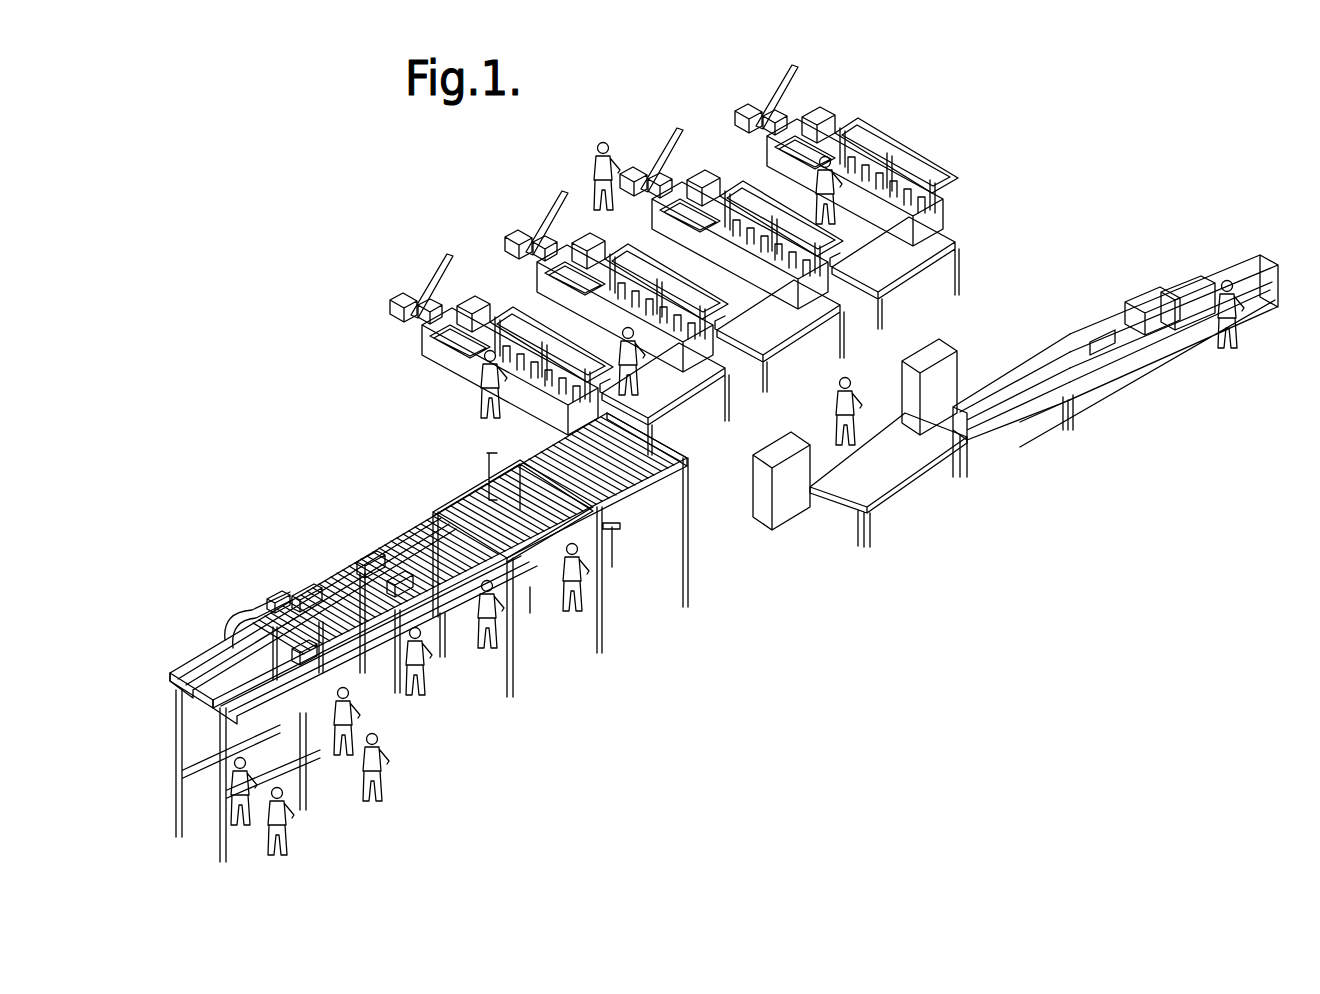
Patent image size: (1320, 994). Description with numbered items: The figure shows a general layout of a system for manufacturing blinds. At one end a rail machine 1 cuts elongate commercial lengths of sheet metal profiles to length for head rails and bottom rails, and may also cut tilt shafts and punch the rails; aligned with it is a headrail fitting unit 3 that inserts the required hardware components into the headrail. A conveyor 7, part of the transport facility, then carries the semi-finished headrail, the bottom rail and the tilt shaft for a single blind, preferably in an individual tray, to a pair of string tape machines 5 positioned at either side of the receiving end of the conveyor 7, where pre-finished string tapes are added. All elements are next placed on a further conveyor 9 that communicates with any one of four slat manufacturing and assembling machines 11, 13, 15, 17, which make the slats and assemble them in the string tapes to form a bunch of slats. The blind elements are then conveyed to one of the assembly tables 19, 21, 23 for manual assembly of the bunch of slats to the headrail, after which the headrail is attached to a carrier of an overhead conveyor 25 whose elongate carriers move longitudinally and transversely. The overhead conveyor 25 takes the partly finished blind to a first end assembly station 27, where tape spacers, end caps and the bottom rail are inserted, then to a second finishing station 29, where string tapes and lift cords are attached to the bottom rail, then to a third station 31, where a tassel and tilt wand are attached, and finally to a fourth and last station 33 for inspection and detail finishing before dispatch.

The rail machine 1 is at (1105, 378).
The headrail fitting unit 3 is at (990, 458).
The string tape machine 5 is at (785, 517).
The conveyor 7 is at (893, 497).
The further conveyor 9 is at (935, 244).
The slat manufacturing and assembling machine 11 is at (738, 97).
The slat manufacturing and assembling machine 13 is at (645, 150).
The slat manufacturing and assembling machine 15 is at (492, 247).
The slat manufacturing and assembling machine 17 is at (418, 293).
The assembly table 19 is at (592, 587).
The assembly table 21 is at (525, 641).
The assembly table 23 is at (425, 690).
The overhead conveyor 25 is at (408, 520).
The first end assembly station 27 is at (368, 722).
The second finishing station 29 is at (202, 830).
The third station 31 is at (373, 810).
The fourth and last station 33 is at (295, 845).